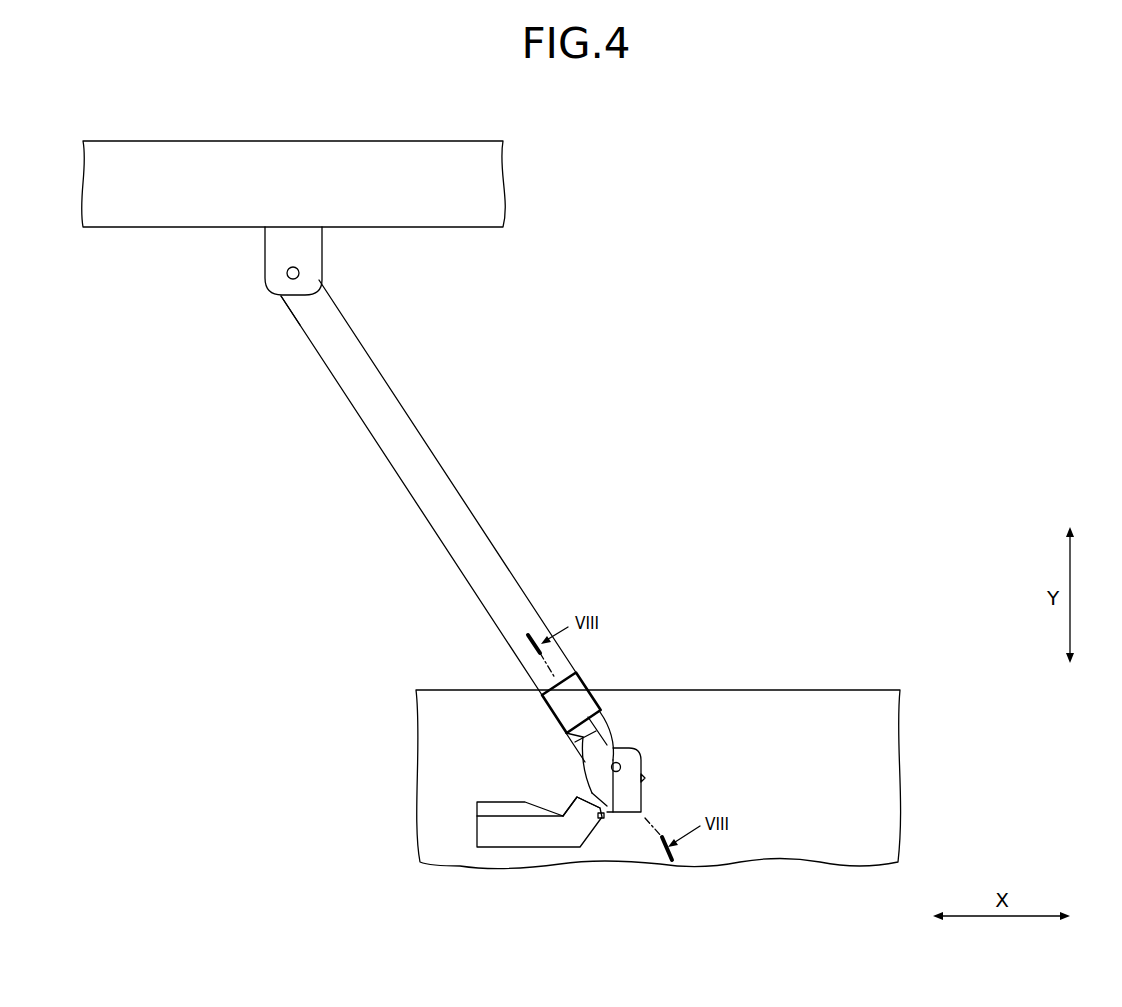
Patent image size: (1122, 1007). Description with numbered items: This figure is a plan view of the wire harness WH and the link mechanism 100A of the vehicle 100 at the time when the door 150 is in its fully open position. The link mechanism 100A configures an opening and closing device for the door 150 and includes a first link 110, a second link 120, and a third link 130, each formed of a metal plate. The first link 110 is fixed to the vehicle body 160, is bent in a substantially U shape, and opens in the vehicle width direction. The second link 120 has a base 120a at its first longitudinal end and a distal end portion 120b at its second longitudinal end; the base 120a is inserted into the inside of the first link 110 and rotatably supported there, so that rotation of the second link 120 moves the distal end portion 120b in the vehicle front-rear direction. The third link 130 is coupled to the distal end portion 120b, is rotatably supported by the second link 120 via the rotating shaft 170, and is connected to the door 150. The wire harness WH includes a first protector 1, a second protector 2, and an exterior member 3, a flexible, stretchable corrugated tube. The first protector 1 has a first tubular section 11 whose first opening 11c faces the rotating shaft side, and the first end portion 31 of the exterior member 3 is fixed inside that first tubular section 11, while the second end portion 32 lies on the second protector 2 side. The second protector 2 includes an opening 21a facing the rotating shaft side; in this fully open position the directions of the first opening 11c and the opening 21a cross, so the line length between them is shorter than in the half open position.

The first protector 1 is at (533, 861).
The second protector 2 is at (576, 686).
The exterior member 3 is at (614, 746).
The first tubular section 11 is at (501, 833).
The first opening 11c is at (580, 792).
The opening 21a is at (606, 750).
The first end portion 31 is at (612, 806).
The second end portion 32 is at (585, 731).
The vehicle 100 is at (590, 160).
The link mechanism 100A is at (429, 575).
The first link 110 is at (622, 824).
The second link 120 is at (460, 507).
The base 120a is at (615, 747).
The distal end portion 120b is at (289, 304).
The third link 130 is at (314, 250).
The door 150 is at (362, 140).
The vehicle body 160 is at (782, 700).
The rotating shaft 170 is at (286, 273).
The wire harness WH is at (596, 524).